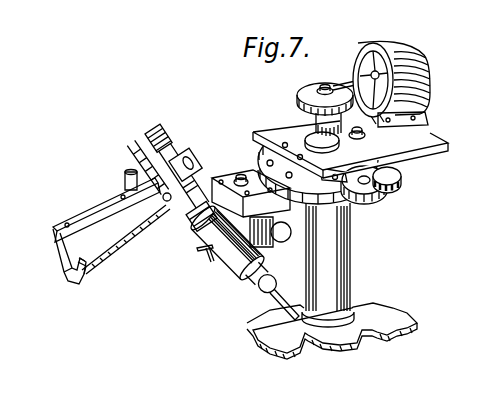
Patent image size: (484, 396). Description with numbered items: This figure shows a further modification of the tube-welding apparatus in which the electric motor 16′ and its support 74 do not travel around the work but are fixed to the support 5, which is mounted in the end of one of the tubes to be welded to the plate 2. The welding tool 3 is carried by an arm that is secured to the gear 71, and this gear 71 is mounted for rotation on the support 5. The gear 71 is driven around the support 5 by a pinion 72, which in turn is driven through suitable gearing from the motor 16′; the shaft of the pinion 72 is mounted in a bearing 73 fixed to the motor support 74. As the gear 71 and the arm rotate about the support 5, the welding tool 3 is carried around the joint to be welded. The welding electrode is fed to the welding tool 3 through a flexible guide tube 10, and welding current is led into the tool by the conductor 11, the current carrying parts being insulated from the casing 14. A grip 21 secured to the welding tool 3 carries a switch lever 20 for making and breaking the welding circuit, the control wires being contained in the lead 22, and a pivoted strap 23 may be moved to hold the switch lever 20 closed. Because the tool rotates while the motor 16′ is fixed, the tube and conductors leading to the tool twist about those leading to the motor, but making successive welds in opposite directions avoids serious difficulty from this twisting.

The plate 2 is at (262, 331).
The welding tool 3 is at (227, 263).
The support 5 is at (340, 260).
The flexible guide tube 10 is at (142, 151).
The conductor 11 is at (162, 128).
The casing 14 is at (209, 231).
The electric motor 16′ is at (410, 63).
The switch lever 20 is at (104, 262).
The grip 21 is at (88, 210).
The lead 22 is at (125, 177).
The pivoted strap 23 is at (67, 281).
The gear 71 is at (400, 186).
The pinion 72 is at (363, 204).
The bearing 73 is at (346, 183).
The support 74 is at (427, 147).